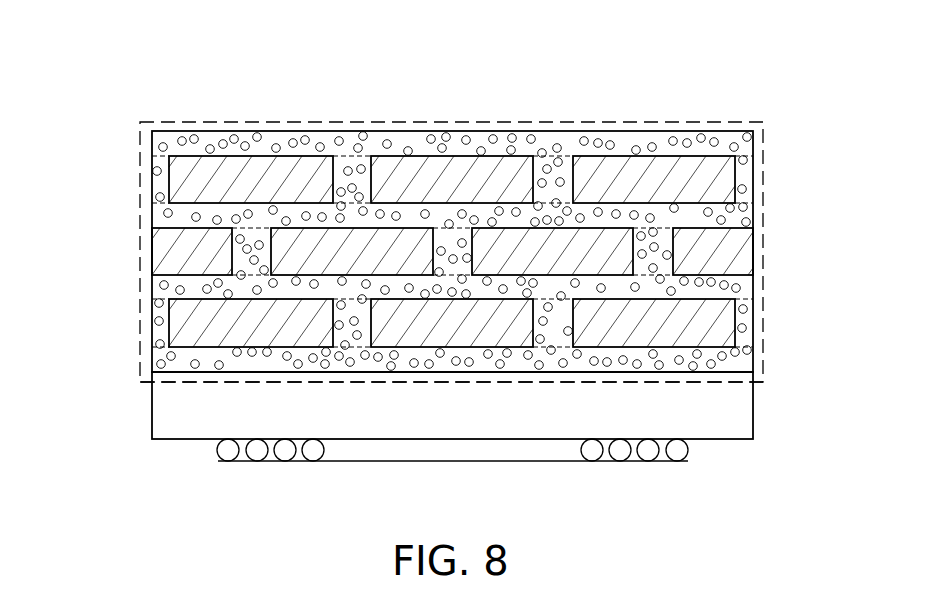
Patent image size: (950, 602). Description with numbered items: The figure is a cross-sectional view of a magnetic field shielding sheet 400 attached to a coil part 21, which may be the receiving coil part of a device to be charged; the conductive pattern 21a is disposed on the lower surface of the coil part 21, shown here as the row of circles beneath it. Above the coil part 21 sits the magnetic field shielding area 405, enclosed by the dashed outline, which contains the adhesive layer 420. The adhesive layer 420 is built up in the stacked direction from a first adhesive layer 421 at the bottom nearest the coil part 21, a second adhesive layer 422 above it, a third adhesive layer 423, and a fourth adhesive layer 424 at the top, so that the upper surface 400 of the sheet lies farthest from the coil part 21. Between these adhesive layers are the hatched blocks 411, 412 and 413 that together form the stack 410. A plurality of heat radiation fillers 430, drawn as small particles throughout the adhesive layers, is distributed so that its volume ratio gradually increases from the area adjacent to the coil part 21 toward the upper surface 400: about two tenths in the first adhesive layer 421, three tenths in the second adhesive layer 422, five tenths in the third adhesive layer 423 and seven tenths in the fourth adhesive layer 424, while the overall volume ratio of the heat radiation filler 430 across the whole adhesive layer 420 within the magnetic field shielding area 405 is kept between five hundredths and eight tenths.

The magnetic field shielding sheet 400 is at (579, 100).
The magnetic field shielding area 405 is at (138, 382).
The electrode layers 410 is at (822, 185).
The first electrode layer 411 is at (748, 330).
The second electrode layer 412 is at (748, 250).
The third electrode layer 413 is at (745, 185).
The adhesive layer 420 is at (80, 143).
The first adhesive layer 421 is at (152, 362).
The second adhesive layer 422 is at (152, 287).
The third adhesive layer 423 is at (152, 219).
The fourth adhesive layer 424 is at (152, 145).
The heat radiation filler 430 is at (753, 150).
The coil part 21 is at (764, 405).
The conductive pattern 21a is at (693, 478).